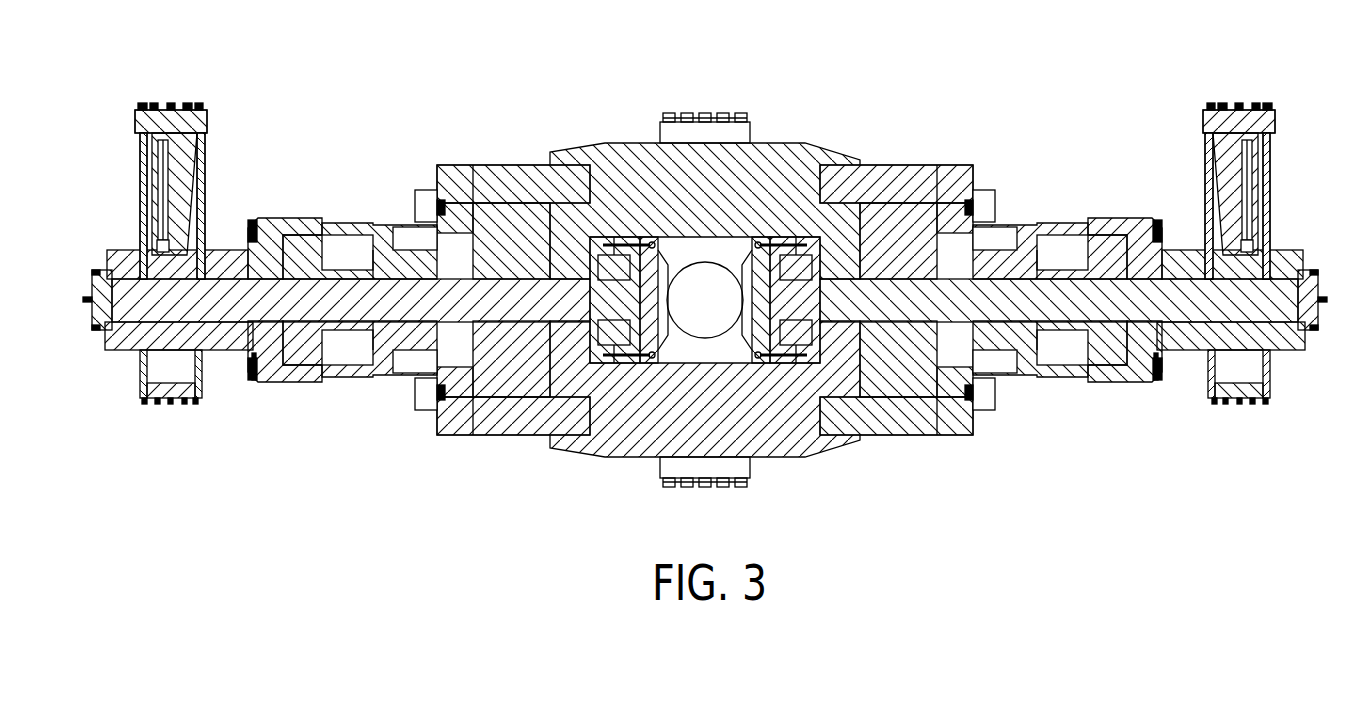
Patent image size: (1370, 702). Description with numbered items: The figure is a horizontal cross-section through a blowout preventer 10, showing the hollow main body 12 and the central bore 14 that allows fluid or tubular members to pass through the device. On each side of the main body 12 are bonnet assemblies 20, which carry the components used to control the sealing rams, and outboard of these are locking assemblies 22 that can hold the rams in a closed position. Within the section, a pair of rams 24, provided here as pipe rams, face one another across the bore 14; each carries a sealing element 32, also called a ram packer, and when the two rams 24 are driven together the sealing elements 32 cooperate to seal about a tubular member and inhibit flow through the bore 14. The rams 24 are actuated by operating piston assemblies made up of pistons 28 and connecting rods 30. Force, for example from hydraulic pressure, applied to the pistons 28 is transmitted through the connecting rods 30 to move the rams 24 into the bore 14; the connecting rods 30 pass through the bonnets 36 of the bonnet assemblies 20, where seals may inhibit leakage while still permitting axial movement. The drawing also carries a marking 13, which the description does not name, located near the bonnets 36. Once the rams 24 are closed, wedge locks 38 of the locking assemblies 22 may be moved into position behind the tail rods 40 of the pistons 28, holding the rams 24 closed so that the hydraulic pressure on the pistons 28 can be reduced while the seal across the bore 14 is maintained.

The blowout preventer 10 is at (715, 282).
The main body 12 is at (790, 147).
The bearing 13 is at (551, 243).
The bore 14 is at (703, 268).
The bonnet assemblies 20 is at (344, 198).
The locking assemblies 22 is at (180, 428).
The rams 24 is at (623, 320).
The pistons 28 is at (331, 365).
The connecting rods 30 is at (433, 308).
The sealing elements 32 is at (632, 332).
The bonnets 36 is at (515, 213).
The wedge locks 38 is at (180, 158).
The tail rods 40 is at (167, 310).